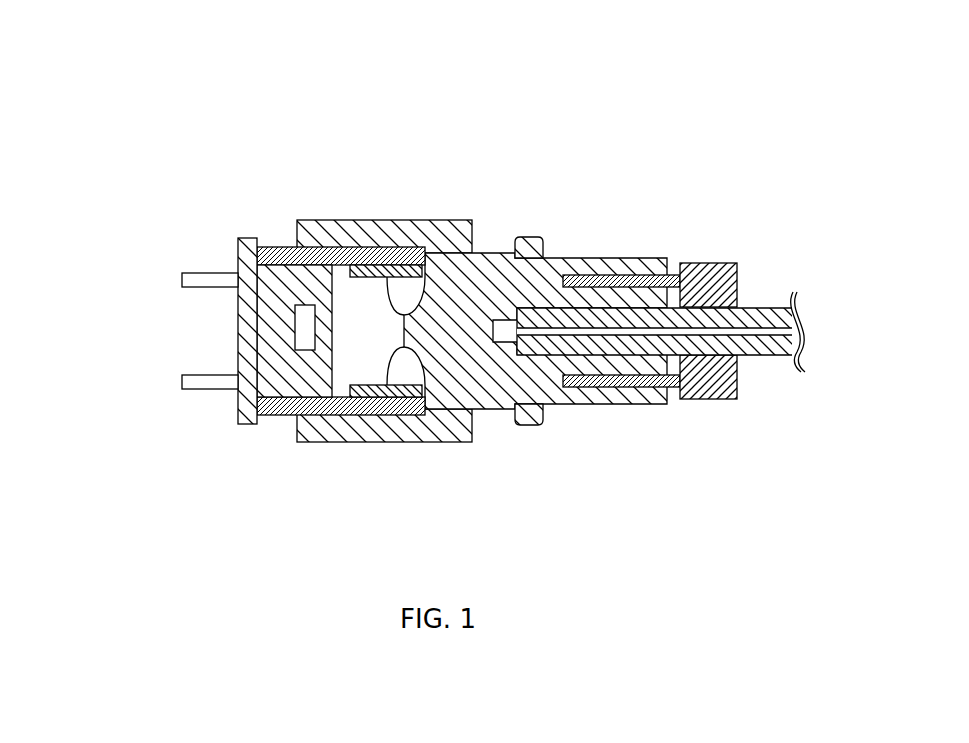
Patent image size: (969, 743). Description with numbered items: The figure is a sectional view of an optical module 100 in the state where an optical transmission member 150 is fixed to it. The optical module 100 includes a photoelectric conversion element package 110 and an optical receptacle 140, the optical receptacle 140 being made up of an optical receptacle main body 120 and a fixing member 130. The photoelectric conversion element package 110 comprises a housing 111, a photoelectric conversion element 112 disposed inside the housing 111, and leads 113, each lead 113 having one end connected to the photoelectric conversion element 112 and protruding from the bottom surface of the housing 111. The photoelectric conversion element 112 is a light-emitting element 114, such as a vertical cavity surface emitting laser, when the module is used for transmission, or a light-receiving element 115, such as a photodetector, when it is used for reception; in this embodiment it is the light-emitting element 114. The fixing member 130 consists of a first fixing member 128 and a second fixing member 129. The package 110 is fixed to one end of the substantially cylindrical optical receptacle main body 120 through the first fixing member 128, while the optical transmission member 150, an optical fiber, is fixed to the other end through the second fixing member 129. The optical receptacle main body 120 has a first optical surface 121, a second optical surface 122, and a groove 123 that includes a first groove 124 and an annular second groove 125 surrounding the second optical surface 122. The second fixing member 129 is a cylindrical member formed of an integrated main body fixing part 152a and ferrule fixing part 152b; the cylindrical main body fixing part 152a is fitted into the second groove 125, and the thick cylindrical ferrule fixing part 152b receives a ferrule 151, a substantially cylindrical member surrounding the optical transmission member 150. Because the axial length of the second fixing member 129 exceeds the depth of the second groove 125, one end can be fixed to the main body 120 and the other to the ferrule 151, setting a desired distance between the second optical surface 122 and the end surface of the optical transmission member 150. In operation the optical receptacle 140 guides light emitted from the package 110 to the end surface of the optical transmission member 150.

The optical module 100 is at (727, 68).
The photoelectric conversion element package 110 is at (302, 143).
The housing 111 is at (238, 252).
The photoelectric conversion element 112 is at (306, 305).
The lead 113 is at (182, 382).
The light-emitting element 114 is at (305, 327).
The light-receiving element 115 is at (305, 327).
The optical receptacle main body 120 is at (480, 305).
The first optical surface 121 is at (398, 405).
The second optical surface 122 is at (495, 330).
The groove 123 is at (607, 131).
The first groove 124 is at (432, 395).
The second groove 125 is at (598, 358).
The first fixing member 128 is at (342, 405).
The second fixing member 129 is at (658, 303).
The fixing member 130 is at (763, 204).
The optical receptacle 140 is at (475, 126).
The optical transmission member 150 is at (664, 340).
The ferrule 151 is at (752, 357).
The main body fixing part 152a is at (633, 275).
The ferrule fixing part 152b is at (703, 263).